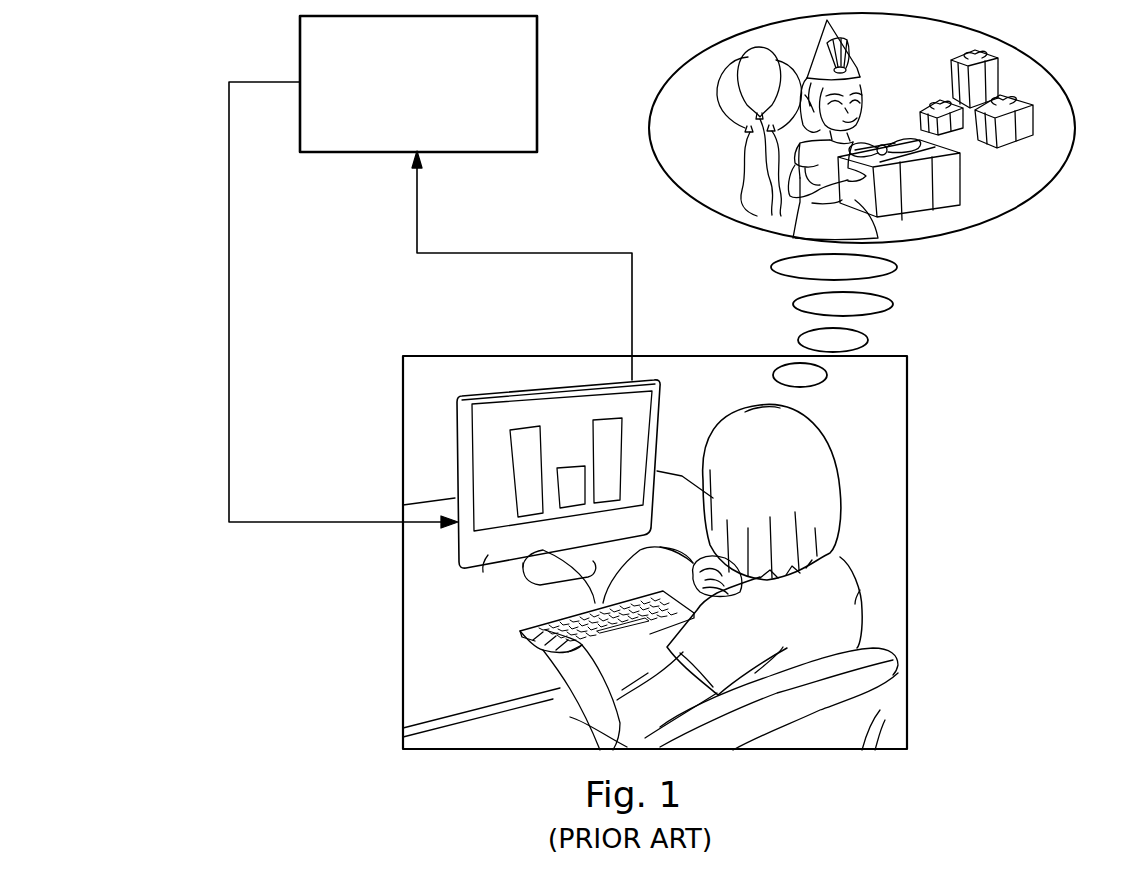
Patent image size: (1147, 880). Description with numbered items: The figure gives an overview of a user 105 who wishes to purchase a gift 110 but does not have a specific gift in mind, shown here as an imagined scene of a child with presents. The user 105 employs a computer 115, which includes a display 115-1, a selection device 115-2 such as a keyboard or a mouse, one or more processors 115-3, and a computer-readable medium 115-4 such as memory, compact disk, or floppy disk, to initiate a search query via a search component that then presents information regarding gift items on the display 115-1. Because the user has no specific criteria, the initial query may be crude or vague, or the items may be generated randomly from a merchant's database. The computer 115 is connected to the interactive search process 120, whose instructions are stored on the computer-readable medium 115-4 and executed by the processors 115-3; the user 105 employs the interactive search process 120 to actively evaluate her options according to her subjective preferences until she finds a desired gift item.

The user 105 is at (845, 562).
The gift 110 is at (1063, 118).
The computer 115 is at (566, 402).
The display 115-1 is at (508, 440).
The selection device 115-2 is at (522, 632).
The one or more processors 115-3 is at (488, 555).
The computer-readable medium 115-4 is at (540, 573).
The interactive search process 120 is at (510, 145).